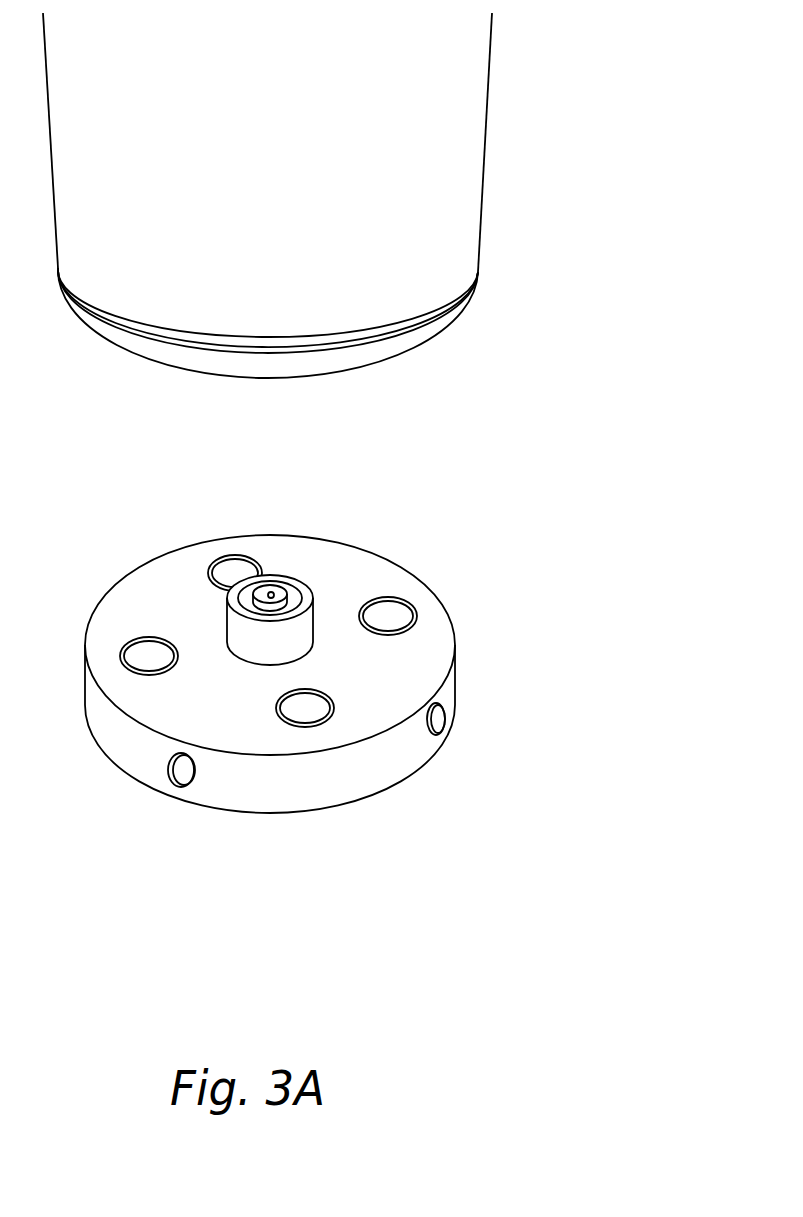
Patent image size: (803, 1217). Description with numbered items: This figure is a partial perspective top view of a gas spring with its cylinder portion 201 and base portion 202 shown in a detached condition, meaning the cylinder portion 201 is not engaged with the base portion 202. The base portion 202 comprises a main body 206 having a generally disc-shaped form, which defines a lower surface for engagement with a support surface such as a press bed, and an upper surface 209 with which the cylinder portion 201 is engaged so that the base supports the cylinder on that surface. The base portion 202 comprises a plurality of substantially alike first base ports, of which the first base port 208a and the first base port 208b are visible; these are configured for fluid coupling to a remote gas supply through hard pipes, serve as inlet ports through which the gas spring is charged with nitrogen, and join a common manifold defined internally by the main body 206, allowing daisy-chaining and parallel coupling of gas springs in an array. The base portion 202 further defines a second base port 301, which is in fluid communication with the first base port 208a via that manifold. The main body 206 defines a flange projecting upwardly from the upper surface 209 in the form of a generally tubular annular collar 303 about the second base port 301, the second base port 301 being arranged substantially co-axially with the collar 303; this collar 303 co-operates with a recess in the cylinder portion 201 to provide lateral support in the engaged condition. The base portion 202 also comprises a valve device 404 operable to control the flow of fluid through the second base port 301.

The cylinder portion 201 is at (570, 260).
The base portion 202 is at (341, 630).
The main body 206 is at (448, 686).
The first base port 208a is at (436, 718).
The first base port 208b is at (182, 770).
The upper surface 209 is at (141, 623).
The second base port 301 is at (271, 592).
The collar 303 is at (307, 596).
The valve device 404 is at (259, 593).